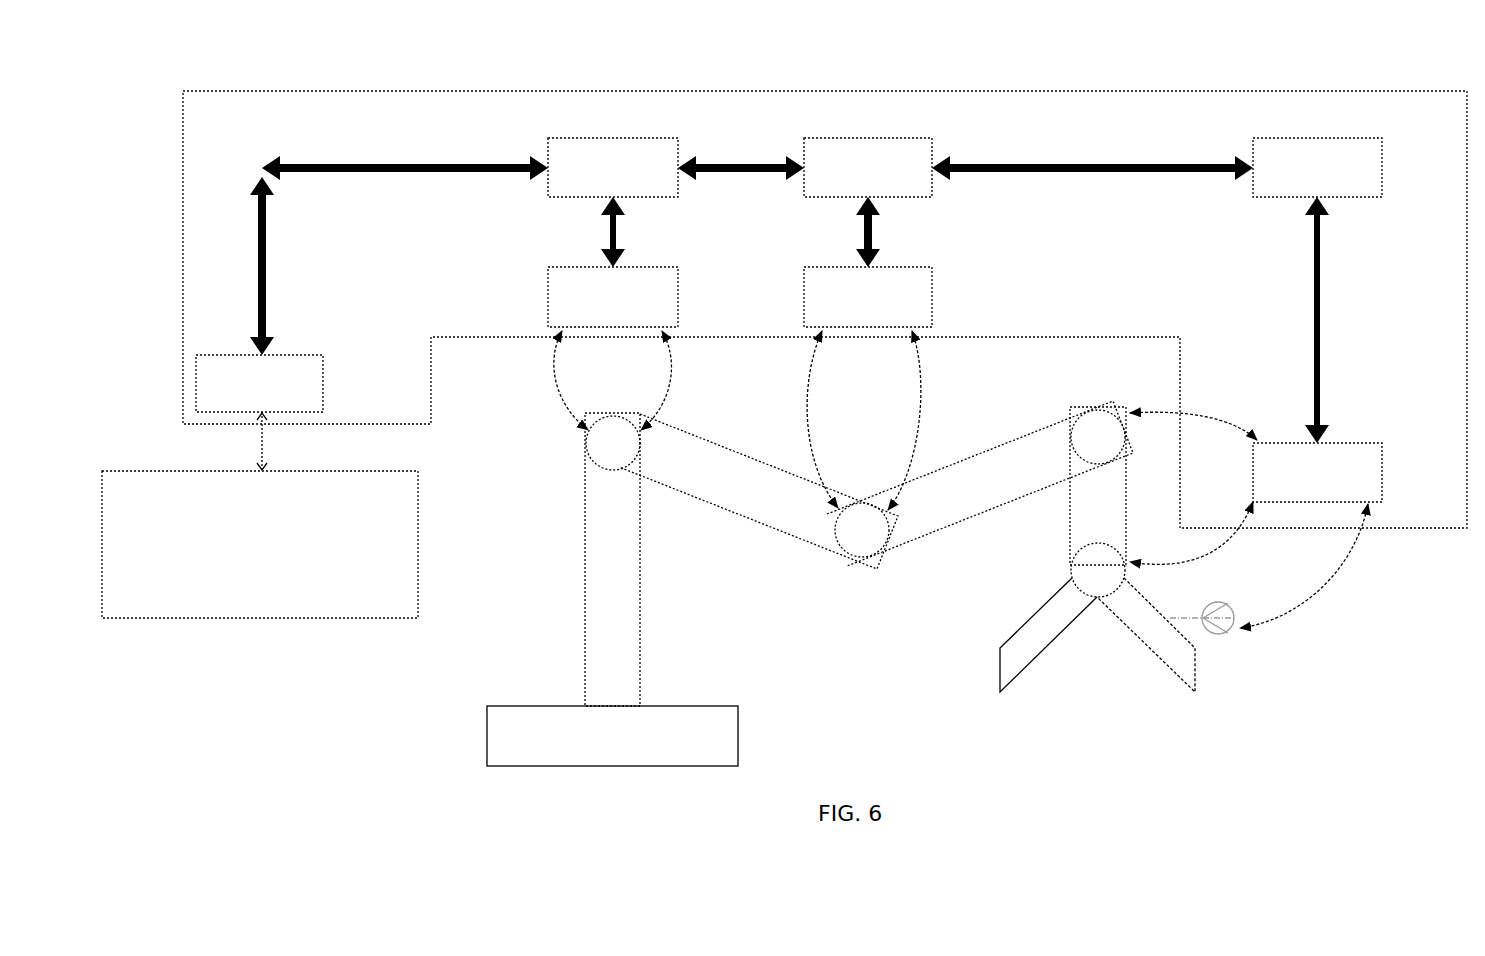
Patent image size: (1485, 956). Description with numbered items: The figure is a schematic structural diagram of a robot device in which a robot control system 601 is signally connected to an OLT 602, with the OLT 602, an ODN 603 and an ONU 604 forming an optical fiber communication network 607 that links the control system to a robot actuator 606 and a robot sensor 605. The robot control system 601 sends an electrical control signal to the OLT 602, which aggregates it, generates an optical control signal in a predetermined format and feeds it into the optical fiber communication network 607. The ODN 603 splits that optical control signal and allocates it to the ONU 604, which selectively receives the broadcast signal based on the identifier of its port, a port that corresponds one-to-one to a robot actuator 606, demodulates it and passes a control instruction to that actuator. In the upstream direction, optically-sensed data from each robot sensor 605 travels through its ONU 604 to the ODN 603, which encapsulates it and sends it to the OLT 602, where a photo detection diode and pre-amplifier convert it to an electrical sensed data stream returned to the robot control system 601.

The robot control system 601 is at (418, 529).
The OLT 602 is at (323, 382).
The ODN 603 is at (678, 148).
The ONU 604 is at (678, 285).
The robot sensor 605 is at (1222, 603).
The robot actuator 606 is at (586, 448).
The optical fiber communication network 607 is at (345, 91).